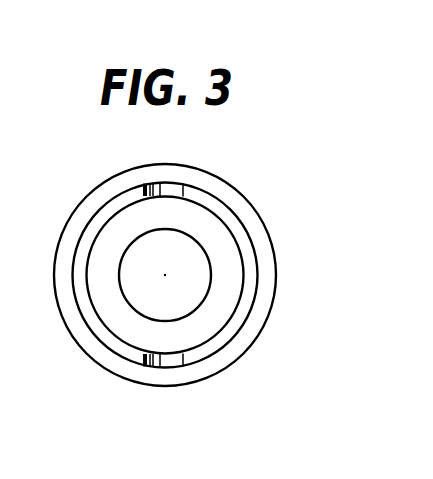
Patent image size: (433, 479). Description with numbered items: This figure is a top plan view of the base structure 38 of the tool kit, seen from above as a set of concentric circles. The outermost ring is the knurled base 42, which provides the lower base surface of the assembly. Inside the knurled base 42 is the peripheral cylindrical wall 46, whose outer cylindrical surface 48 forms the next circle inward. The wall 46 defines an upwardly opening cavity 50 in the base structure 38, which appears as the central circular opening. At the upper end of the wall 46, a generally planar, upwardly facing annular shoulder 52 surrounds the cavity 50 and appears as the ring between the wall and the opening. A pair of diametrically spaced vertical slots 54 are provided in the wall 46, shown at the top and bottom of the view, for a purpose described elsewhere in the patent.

The base structure 38 is at (68, 240).
The knurled base 42 is at (108, 187).
The peripheral cylindrical wall 46 is at (228, 220).
The outer cylindrical surface 48 is at (252, 303).
The cavity 50 is at (222, 275).
The annular shoulder 52 is at (232, 332).
The vertical slots 54 is at (180, 193).